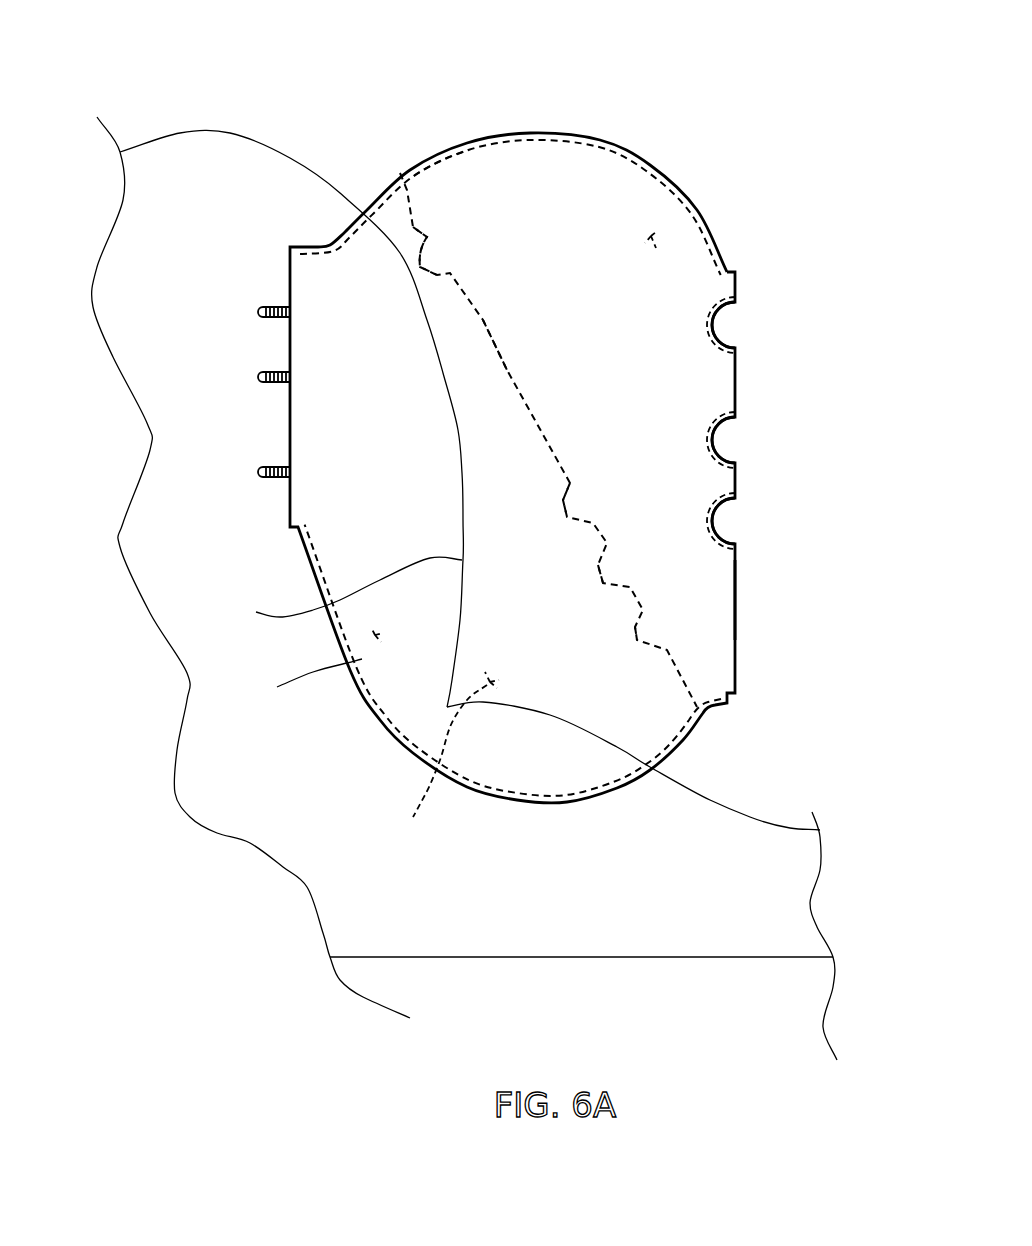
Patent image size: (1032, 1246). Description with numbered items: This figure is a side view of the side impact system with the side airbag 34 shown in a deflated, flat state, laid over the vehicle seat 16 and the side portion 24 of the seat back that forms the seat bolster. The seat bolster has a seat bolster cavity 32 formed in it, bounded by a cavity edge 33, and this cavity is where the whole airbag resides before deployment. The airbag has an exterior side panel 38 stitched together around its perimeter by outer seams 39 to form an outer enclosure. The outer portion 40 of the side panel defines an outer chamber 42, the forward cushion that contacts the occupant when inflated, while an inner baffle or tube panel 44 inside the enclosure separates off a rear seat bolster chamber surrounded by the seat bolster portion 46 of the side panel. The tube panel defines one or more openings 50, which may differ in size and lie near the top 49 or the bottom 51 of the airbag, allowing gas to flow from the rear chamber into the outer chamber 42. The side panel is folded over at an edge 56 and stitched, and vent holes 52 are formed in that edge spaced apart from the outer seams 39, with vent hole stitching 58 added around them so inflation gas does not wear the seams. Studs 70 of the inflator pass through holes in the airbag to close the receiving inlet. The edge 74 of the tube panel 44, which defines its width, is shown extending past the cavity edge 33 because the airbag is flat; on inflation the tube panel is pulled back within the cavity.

The vehicle seat 16 is at (772, 835).
The side portion of the seat back 24 is at (238, 145).
The seat bolster cavity 32 is at (308, 687).
The cavity edge 33 is at (344, 587).
The side airbag 34 is at (652, 58).
The exterior side panel 38 is at (695, 741).
The outer seams 39 is at (556, 132).
The outer portion 40 is at (463, 177).
The outer chamber 42 is at (655, 234).
The tube panel 44 is at (486, 318).
The seat bolster portion 46 is at (411, 720).
The top 49 is at (372, 195).
The openings 50 is at (405, 172).
The bottom 51 is at (642, 785).
The vent holes 52 is at (720, 333).
The edge 56 is at (737, 597).
The vent hole stitching 58 is at (740, 300).
The studs 70 is at (264, 310).
The edge of the tube panel 74 is at (507, 372).